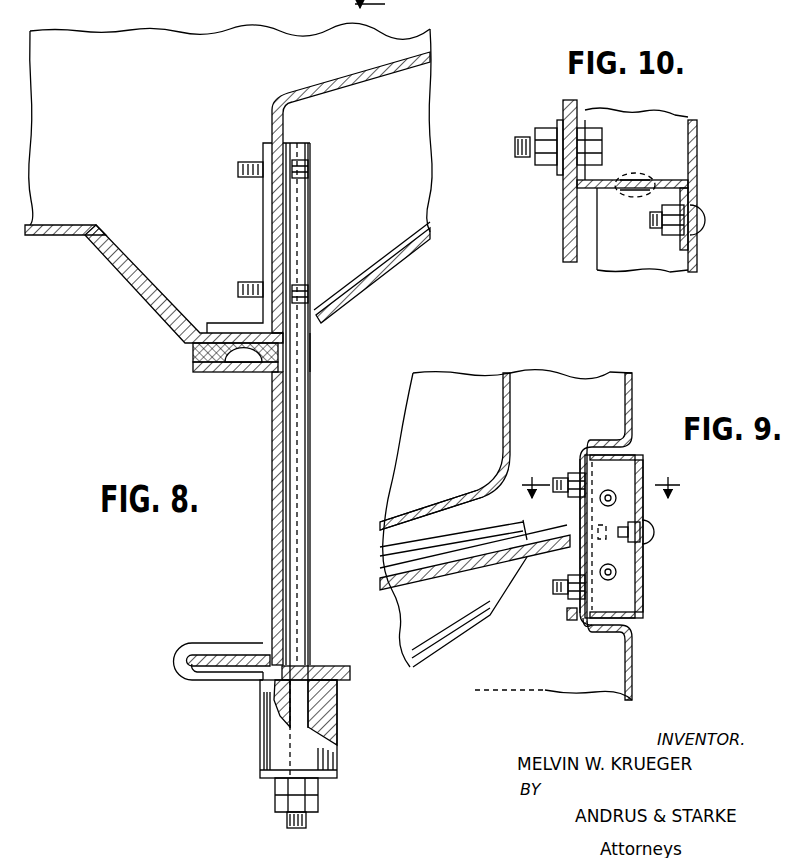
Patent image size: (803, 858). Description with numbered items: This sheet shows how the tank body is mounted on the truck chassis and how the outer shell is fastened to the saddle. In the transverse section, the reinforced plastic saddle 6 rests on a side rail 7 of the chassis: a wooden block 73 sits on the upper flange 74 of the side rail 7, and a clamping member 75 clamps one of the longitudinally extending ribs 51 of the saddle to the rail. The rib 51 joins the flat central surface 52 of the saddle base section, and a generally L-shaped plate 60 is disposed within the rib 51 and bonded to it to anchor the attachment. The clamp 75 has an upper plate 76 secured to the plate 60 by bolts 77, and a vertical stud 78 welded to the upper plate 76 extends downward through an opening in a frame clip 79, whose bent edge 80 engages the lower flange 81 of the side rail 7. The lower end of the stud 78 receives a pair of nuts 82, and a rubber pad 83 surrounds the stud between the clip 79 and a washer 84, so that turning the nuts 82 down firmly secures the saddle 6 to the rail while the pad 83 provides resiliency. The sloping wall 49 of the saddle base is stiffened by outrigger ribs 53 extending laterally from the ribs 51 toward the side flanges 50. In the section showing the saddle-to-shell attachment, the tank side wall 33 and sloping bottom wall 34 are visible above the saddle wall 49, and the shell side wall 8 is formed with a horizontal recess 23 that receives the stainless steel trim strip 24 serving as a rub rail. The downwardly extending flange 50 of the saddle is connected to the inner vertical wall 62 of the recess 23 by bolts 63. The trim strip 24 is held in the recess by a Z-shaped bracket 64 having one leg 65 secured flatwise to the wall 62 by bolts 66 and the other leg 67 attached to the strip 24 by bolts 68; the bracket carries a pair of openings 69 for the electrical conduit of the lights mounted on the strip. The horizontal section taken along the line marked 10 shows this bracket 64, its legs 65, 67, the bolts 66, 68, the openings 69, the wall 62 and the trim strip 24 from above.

In FIG. 8, the saddle 6 is at (106, 298).
In FIG. 8, the side rail 7 is at (272, 569).
In FIG. 9, the side wall 8 is at (632, 426).
In FIG. 9, the rear wall 10 is at (604, 475).
In FIG. 9, the horizontal recess 23 is at (594, 633).
In FIG. 10, the trim strip 24 is at (697, 156).
In FIG. 9, the trim strip 24 is at (643, 584).
In FIG. 9, the side wall 33 is at (503, 410).
In FIG. 9, the sloping bottom wall 34 is at (425, 510).
In FIG. 8, the sloping wall 49 is at (356, 80).
In FIG. 9, the sloping wall 49 is at (440, 586).
In FIG. 9, the side flange 50 is at (567, 618).
In FIG. 8, the rib 51 is at (118, 258).
In FIG. 8, the central surface 52 is at (50, 226).
In FIG. 8, the outrigger rib 53 is at (380, 278).
In FIG. 9, the outrigger rib 53 is at (465, 643).
In FIG. 8, the L-shaped plate 60 is at (263, 227).
In FIG. 10, the inner vertical wall 62 is at (577, 239).
In FIG. 9, the inner vertical wall 62 is at (580, 521).
In FIG. 9, the bolt 63 is at (553, 588).
In FIG. 10, the Z-shaped bracket 64 is at (666, 180).
In FIG. 9, the Z-shaped bracket 64 is at (632, 556).
In FIG. 10, the leg 65 is at (586, 112).
In FIG. 9, the leg 65 is at (606, 542).
In FIG. 10, the bolt 66 is at (523, 137).
In FIG. 9, the bolt 66 is at (563, 478).
In FIG. 10, the leg 67 is at (688, 248).
In FIG. 9, the leg 67 is at (640, 613).
In FIG. 10, the bolt 68 is at (705, 221).
In FIG. 9, the bolt 68 is at (652, 533).
In FIG. 10, the opening 69 is at (635, 176).
In FIG. 9, the opening 69 is at (620, 486).
In FIG. 8, the wooden block 73 is at (193, 352).
In FIG. 8, the upper flange 74 is at (206, 372).
In FIG. 8, the clamping member 75 is at (310, 369).
In FIG. 8, the upper plate 76 is at (290, 239).
In FIG. 8, the bolt 77 is at (300, 172).
In FIG. 8, the vertical stud 78 is at (310, 497).
In FIG. 8, the frame clip 79 is at (236, 681).
In FIG. 8, the bent edge 80 is at (174, 662).
In FIG. 8, the lower flange 81 is at (232, 656).
In FIG. 8, the nut 82 is at (318, 809).
In FIG. 8, the rubber pad 83 is at (337, 722).
In FIG. 8, the washer 84 is at (338, 774).